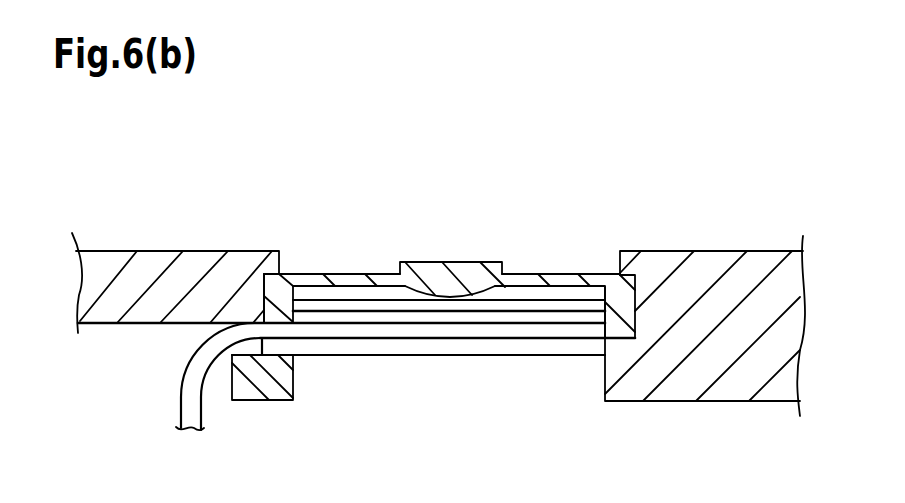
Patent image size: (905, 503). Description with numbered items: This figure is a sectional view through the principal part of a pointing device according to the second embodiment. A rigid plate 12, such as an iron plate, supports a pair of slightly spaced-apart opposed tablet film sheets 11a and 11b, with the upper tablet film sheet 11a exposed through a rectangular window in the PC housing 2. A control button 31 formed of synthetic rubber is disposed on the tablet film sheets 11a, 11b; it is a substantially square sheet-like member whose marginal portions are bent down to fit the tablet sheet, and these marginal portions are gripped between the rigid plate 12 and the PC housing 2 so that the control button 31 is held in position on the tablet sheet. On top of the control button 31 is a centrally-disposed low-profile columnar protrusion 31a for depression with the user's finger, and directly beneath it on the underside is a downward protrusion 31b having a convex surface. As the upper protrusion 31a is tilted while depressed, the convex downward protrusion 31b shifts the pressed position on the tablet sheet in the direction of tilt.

The PC housing 2 is at (192, 271).
The control button 31 is at (545, 278).
The columnar protrusion 31a is at (462, 265).
The downward protrusion 31b is at (457, 288).
The upper tablet film sheet 11a is at (588, 279).
The lower tablet film sheet 11b is at (512, 317).
The rigid plate 12 is at (327, 348).